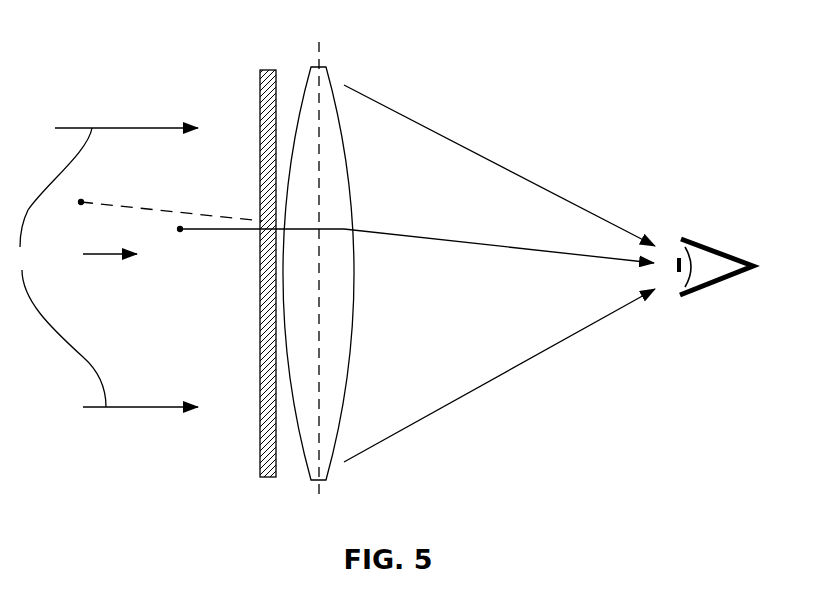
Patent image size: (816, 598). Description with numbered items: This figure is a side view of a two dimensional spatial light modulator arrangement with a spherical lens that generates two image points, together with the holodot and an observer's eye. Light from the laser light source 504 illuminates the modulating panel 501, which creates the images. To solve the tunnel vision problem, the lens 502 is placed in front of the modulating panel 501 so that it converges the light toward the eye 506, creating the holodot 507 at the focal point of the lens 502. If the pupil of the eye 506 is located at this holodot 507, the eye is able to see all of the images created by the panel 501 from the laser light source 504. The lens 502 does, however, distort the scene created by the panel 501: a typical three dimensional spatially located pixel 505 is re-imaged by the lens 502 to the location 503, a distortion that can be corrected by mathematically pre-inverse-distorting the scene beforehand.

The modulating panel 501 is at (268, 70).
The lens 502 is at (328, 73).
The re-imaged pixel location 503 is at (81, 202).
The laser light source 504 is at (102, 254).
The 3D spatially located pixel 505 is at (180, 229).
The eye 506 is at (715, 248).
The holodot 507 is at (677, 280).